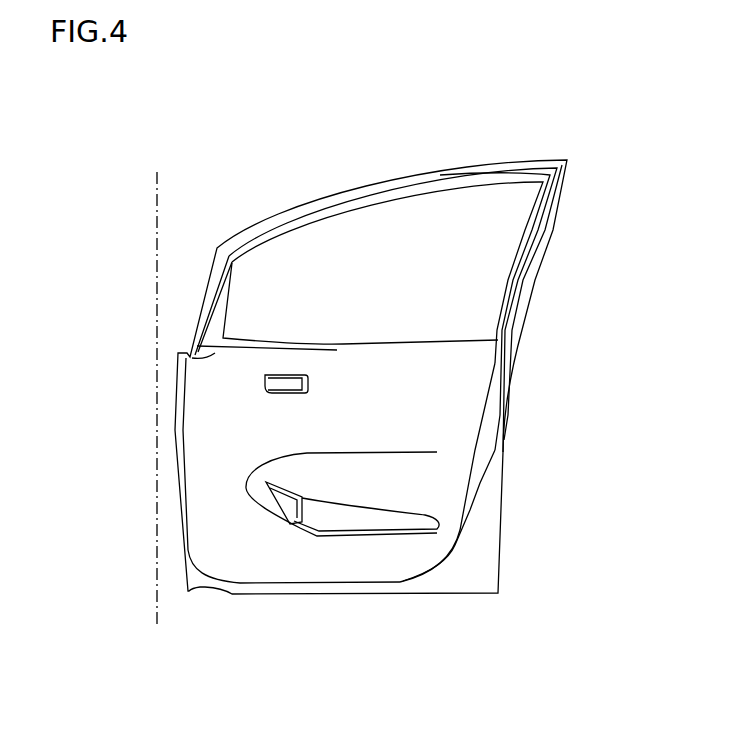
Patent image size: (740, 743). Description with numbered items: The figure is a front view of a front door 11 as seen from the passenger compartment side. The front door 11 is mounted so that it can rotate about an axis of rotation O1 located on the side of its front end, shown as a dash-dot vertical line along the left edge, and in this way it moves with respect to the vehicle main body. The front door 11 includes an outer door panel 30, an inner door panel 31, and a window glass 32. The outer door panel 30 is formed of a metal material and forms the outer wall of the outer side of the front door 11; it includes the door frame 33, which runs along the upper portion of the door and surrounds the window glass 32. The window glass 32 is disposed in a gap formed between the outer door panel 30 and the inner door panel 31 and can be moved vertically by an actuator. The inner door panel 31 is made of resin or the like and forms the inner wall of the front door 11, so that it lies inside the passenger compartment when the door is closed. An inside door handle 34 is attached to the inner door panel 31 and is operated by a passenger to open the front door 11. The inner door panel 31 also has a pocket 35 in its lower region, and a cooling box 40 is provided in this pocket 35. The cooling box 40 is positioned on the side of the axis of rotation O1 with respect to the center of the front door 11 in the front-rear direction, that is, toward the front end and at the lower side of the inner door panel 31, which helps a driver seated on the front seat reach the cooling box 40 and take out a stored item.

The front door 11 is at (443, 131).
The outer door panel 30 is at (490, 502).
The inner door panel 31 is at (477, 415).
The window glass 32 is at (490, 299).
The door frame 33 is at (510, 161).
The inside door handle 34 is at (266, 385).
The pocket 35 is at (347, 523).
The cooling box 40 is at (290, 508).
The axis of rotation O1 is at (158, 191).